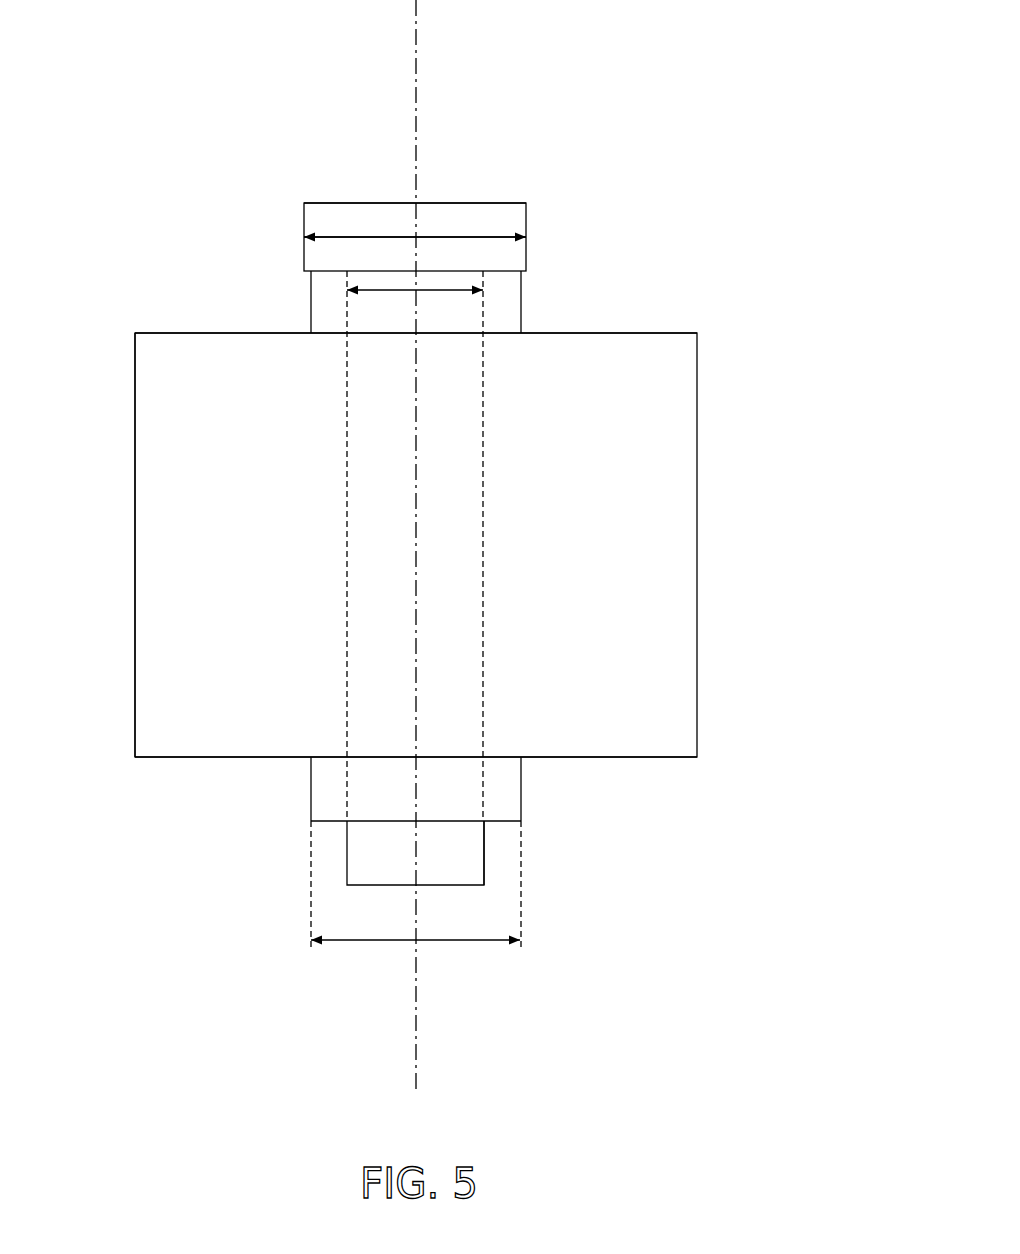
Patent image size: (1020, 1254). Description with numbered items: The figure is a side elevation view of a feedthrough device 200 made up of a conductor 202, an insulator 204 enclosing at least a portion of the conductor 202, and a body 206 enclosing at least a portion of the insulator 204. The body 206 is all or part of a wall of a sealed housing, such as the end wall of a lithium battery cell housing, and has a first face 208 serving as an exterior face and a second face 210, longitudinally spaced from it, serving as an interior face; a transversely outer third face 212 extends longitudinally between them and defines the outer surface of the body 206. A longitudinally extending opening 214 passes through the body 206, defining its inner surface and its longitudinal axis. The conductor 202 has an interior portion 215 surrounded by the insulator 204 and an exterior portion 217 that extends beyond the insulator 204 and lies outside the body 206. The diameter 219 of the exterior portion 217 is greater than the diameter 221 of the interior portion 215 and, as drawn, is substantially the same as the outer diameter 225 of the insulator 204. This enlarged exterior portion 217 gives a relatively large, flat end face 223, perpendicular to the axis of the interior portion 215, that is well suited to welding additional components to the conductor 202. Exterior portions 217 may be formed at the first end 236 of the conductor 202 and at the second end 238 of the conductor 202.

The feedthrough device 200 is at (732, 100).
The conductor 202 is at (416, 862).
The insulator 204 is at (503, 795).
The body 206 is at (697, 485).
The first face 208 is at (212, 333).
The second face 210 is at (211, 760).
The third face 212 is at (135, 517).
The opening 214 is at (522, 331).
The interior portion 215 is at (485, 293).
The exterior portion 217 is at (304, 232).
The diameter of the exterior portion 219 is at (368, 237).
The diameter of the interior portion 221 is at (395, 293).
The end face 223 is at (460, 203).
The outer diameter of the insulator 225 is at (483, 942).
The first end 236 is at (330, 176).
The second end 238 is at (487, 860).